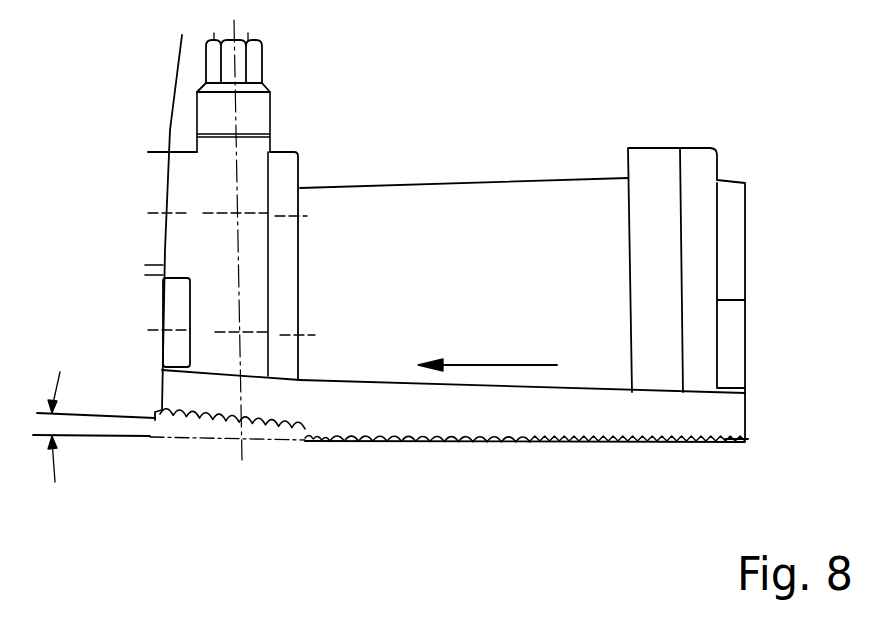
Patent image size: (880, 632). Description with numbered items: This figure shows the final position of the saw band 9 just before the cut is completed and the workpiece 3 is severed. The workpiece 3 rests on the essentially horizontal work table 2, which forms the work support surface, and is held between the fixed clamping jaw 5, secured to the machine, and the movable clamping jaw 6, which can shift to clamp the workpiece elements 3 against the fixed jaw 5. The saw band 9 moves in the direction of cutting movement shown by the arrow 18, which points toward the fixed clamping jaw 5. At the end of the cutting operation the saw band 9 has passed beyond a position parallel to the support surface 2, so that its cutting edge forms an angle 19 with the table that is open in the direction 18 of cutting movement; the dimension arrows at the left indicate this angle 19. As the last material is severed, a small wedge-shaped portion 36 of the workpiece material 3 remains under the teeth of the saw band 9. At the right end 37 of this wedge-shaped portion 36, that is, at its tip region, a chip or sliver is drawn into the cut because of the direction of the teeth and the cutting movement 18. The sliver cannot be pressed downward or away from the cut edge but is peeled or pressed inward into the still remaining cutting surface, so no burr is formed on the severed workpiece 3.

The work table 2 is at (150, 437).
The workpiece 3 is at (398, 213).
The fixed clamping jaw 5 is at (285, 172).
The movable clamping jaw 6 is at (642, 175).
The saw band 9 is at (567, 420).
The direction of cutting movement 18 is at (485, 365).
The angle of inclination 19 is at (62, 422).
The wedge-shaped portion 36 is at (315, 443).
The right end of wedge-shaped portion 37 is at (428, 445).